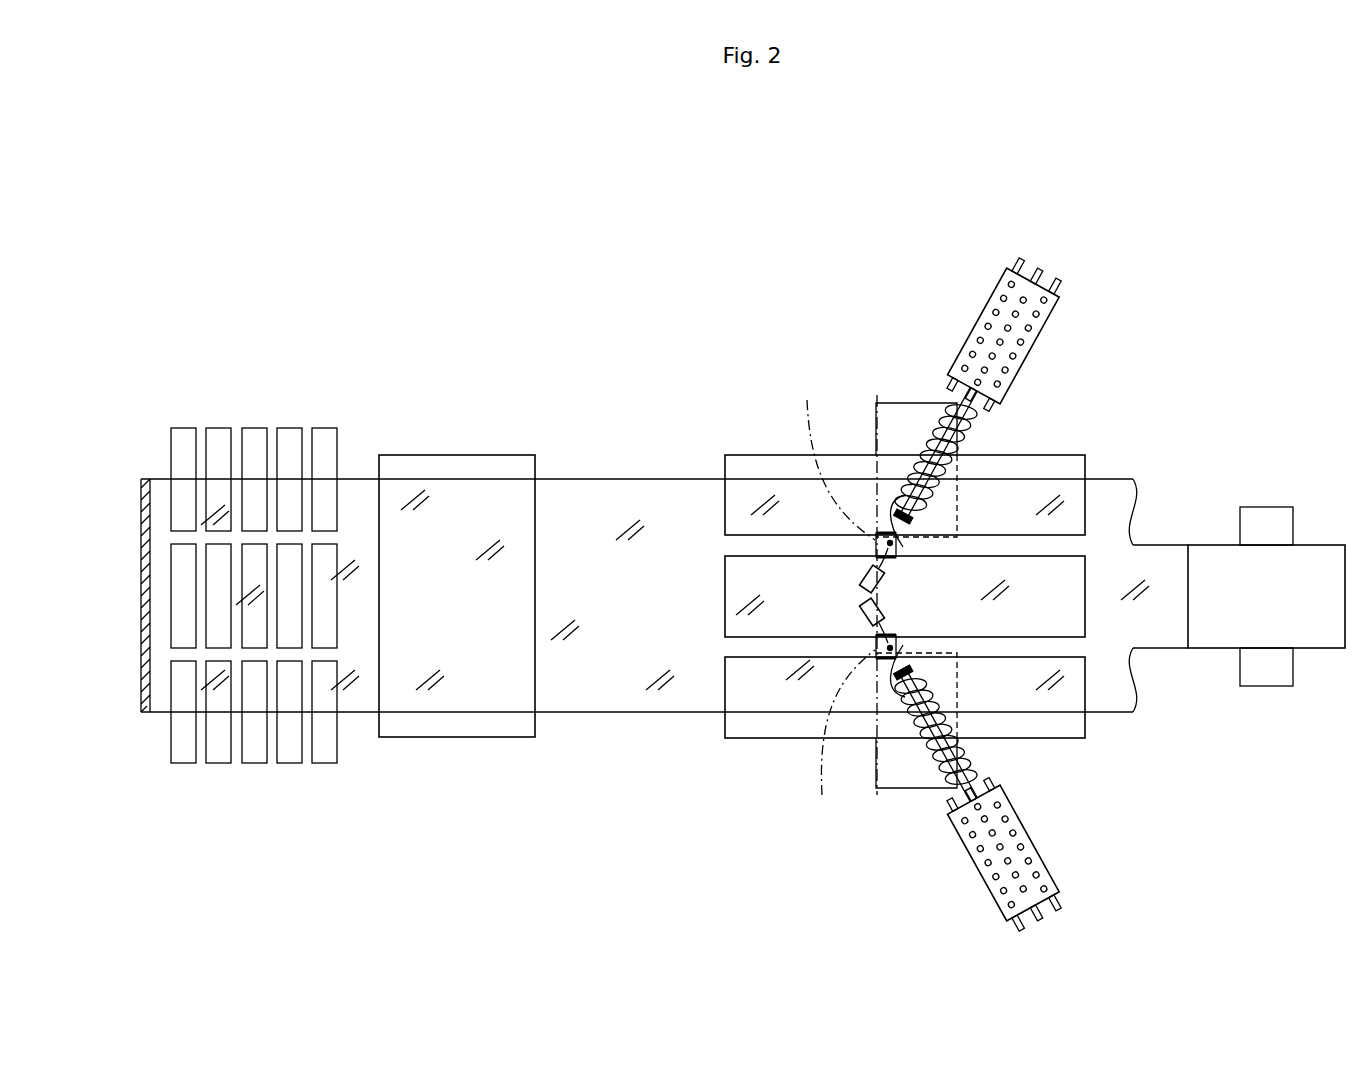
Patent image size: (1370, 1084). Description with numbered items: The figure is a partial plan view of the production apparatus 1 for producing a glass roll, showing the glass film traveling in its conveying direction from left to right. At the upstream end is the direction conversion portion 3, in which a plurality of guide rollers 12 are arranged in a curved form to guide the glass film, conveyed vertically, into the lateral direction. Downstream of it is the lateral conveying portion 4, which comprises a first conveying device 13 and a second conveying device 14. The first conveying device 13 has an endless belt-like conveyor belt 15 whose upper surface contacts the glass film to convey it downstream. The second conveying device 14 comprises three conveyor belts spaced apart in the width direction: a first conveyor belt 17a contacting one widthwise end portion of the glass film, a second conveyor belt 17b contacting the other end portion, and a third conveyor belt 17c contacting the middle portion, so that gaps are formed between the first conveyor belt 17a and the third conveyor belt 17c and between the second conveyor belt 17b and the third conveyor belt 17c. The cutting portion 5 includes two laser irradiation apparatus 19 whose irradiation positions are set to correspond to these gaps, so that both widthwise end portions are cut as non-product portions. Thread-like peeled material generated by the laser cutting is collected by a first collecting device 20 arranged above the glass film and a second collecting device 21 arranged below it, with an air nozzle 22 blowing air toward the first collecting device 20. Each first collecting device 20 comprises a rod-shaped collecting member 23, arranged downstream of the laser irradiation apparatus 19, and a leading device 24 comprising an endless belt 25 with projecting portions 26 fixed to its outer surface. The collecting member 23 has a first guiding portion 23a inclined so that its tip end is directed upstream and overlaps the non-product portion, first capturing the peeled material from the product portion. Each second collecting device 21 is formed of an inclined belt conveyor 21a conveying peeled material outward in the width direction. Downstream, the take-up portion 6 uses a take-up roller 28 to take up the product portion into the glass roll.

The production apparatus 1 is at (750, 260).
The direction conversion portion 3 is at (254, 644).
The lateral conveying portion 4 is at (457, 665).
The cutting portion 5 is at (875, 408).
The take-up portion 6 is at (1275, 553).
The guide rollers 12 is at (180, 765).
The first conveying device 13 is at (457, 648).
The second conveying device 14 is at (879, 619).
The conveyor belt 15 is at (475, 740).
The first conveyor belt 17a is at (718, 730).
The second conveyor belt 17b is at (768, 455).
The third conveyor belt 17c is at (725, 597).
The laser irradiation apparatus 19 is at (832, 595).
The first collecting device 20 is at (981, 586).
The second collecting device 21 is at (980, 586).
The belt conveyor 21a is at (938, 403).
The air nozzle 22 is at (860, 613).
The collecting member 23 is at (971, 609).
The first guiding portion 23a is at (997, 609).
The leading device 24 is at (997, 609).
The belt 25 is at (993, 594).
The projecting portions 26 is at (1012, 365).
The take-up roller 28 is at (1285, 665).